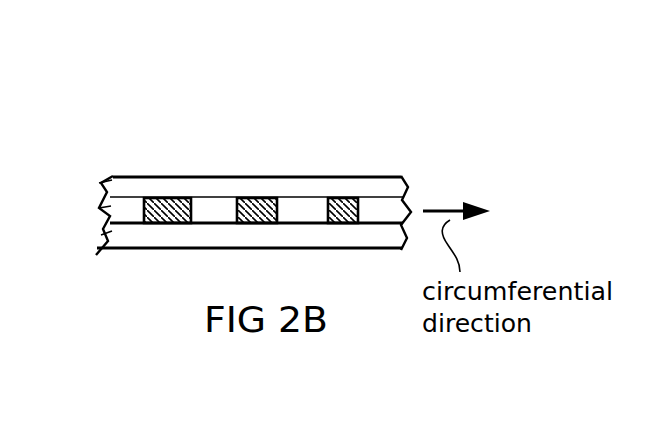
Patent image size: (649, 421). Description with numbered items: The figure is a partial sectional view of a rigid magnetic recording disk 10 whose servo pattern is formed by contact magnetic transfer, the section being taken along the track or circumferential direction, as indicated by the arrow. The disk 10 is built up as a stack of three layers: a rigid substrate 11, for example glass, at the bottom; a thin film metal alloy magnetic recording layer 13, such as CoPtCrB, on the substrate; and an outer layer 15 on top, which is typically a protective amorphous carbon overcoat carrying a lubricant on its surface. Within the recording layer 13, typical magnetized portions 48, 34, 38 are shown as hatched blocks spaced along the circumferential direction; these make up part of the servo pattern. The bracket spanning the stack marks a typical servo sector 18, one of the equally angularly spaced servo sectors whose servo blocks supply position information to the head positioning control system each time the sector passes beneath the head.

The servo sector 18 is at (410, 80).
The magnetic recording disk 10 is at (295, 125).
The outer layer 15 is at (110, 180).
The magnetic recording layer 13 is at (108, 208).
The rigid substrate 11 is at (100, 250).
The magnetized portion 48 is at (166, 197).
The magnetized portion 34 is at (255, 197).
The magnetized portion 38 is at (346, 197).